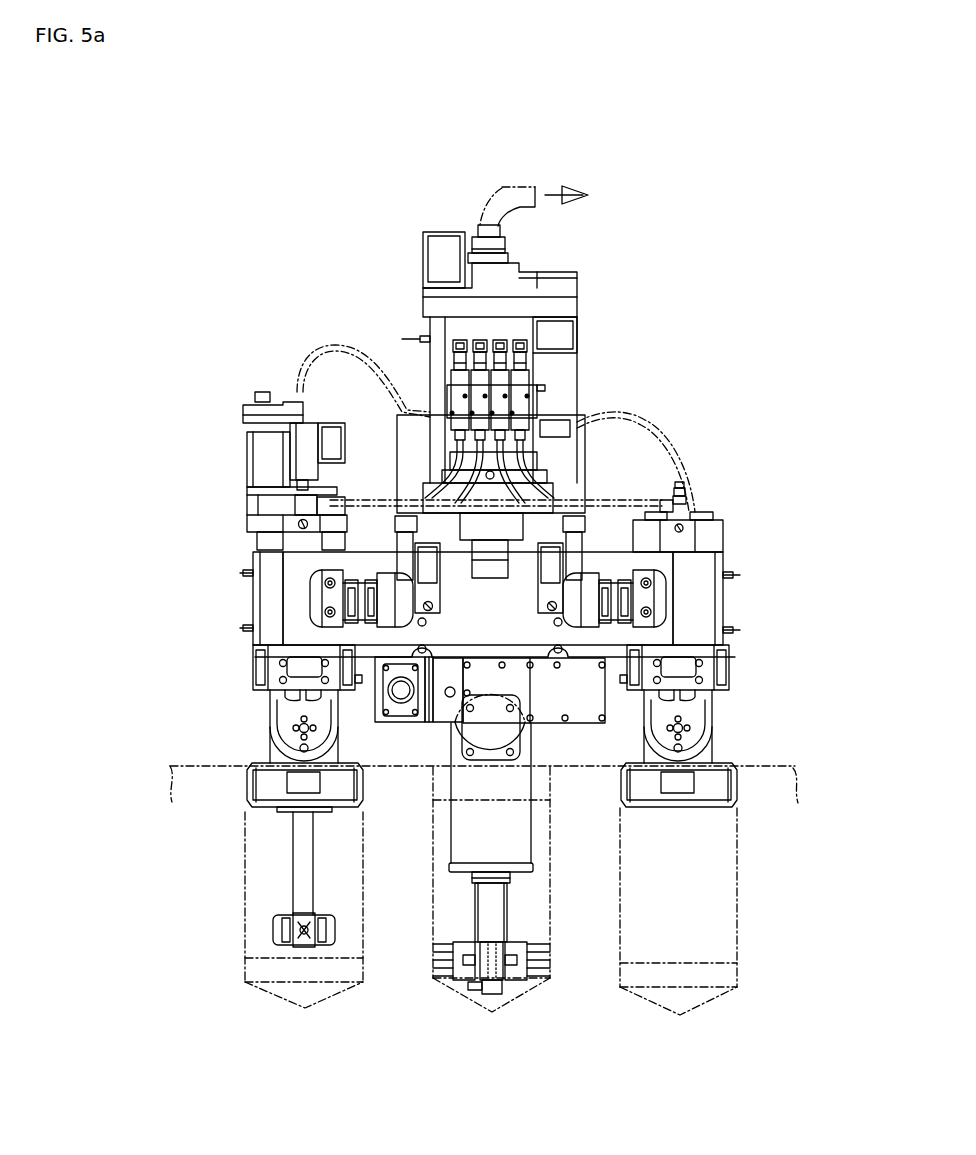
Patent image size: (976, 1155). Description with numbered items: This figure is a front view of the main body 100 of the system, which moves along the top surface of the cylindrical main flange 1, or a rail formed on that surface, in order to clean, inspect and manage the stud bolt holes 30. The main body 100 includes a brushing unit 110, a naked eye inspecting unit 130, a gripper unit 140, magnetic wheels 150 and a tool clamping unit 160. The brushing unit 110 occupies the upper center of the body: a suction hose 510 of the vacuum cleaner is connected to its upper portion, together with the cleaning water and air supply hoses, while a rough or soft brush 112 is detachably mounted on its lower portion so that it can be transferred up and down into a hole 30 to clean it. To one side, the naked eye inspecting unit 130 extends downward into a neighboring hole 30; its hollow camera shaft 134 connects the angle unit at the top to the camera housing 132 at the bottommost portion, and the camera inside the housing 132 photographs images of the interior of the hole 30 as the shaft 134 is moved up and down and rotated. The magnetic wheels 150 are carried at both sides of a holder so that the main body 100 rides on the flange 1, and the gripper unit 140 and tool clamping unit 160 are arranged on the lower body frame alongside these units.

The main body 100 is at (306, 137).
The suction hose 510 is at (500, 188).
The brushing unit 110 is at (436, 266).
The naked eye inspecting unit 130 is at (269, 443).
The tool clamping unit 160 is at (688, 598).
The gripper unit 140 is at (727, 674).
The magnetic wheels 150 is at (717, 735).
The cylindrical main flange 1 is at (207, 764).
The camera shaft 134 is at (302, 866).
The camera housing 132 is at (273, 925).
The stud bolt holes 30 is at (433, 910).
The brush 112 is at (543, 982).